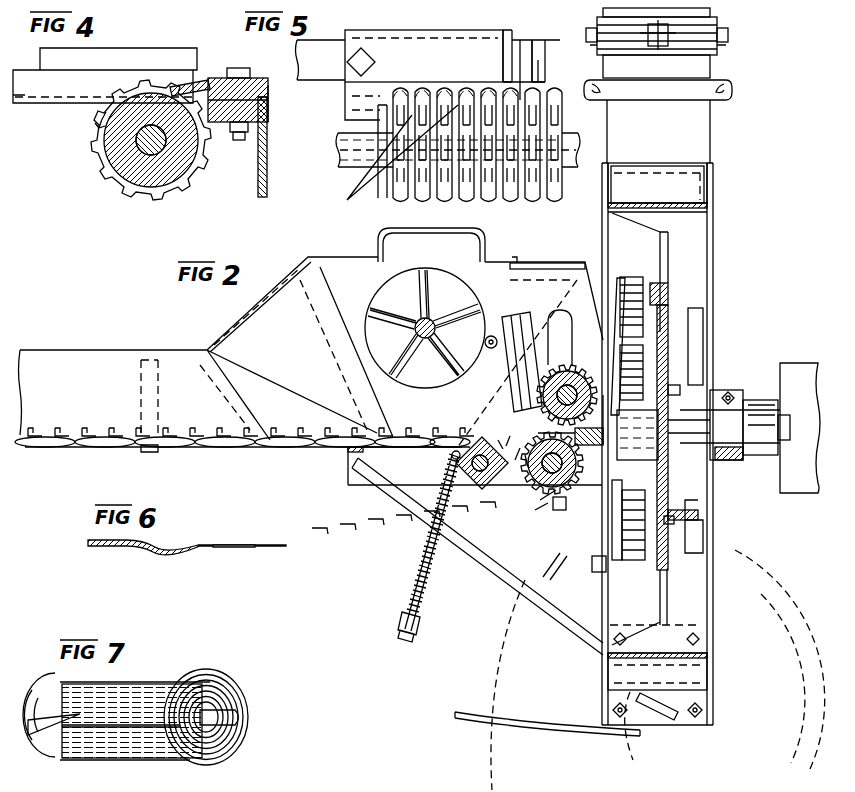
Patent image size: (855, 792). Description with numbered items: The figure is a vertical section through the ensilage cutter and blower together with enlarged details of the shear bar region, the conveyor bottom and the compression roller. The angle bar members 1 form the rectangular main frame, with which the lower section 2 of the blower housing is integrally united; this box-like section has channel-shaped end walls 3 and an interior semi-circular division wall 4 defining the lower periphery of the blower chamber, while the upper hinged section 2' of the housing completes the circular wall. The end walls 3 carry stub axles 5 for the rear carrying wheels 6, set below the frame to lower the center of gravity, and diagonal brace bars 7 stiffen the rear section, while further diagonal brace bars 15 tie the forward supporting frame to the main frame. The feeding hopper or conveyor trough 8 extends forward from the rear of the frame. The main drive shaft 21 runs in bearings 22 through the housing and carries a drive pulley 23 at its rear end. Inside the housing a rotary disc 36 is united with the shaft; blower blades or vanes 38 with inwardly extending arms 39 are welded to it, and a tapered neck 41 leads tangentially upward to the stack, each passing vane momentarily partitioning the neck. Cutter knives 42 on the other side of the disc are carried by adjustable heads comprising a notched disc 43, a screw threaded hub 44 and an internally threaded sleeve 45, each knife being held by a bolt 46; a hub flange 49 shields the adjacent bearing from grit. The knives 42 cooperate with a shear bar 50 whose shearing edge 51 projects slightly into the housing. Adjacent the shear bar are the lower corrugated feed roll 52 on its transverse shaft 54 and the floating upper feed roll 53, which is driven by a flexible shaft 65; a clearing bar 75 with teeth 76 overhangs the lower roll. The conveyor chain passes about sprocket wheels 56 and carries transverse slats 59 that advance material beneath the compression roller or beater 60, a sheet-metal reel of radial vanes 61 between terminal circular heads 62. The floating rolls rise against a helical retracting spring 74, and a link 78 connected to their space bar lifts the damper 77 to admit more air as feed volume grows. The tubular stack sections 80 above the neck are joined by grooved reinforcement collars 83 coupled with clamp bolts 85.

In FIG. 2, the angle bar members of the main frame 1 is at (348, 460).
In FIG. 4, the lower section of the blower housing 2 is at (273, 147).
In FIG. 5, the lower section of the blower housing 2 is at (536, 46).
In FIG. 2, the lower section of the blower housing 2 is at (706, 531).
In FIG. 2, the upper hinged section of the blower housing 2' is at (676, 444).
In FIG. 2, the end walls 3 is at (657, 716).
In FIG. 2, the semi-circular division wall 4 is at (680, 672).
In FIG. 2, the stub axles 5 is at (633, 737).
In FIG. 2, the rear carrying wheels 6 is at (496, 306).
In FIG. 2, the diagonal brace bars 7 is at (495, 574).
In FIG. 4, the feeding hopper or conveyor trough 8 is at (105, 75).
In FIG. 2, the feeding hopper or conveyor trough 8 is at (309, 340).
In FIG. 6, the feeding hopper or conveyor trough 8 is at (192, 545).
In FIG. 2, the diagonal brace bars 15 is at (541, 726).
In FIG. 2, the main drive shaft 21 is at (766, 456).
In FIG. 2, the bearings 22 is at (724, 425).
In FIG. 2, the drive pulley 23 is at (789, 485).
In FIG. 2, the rotary disc 36 is at (656, 340).
In FIG. 2, the blower blades or vanes 38 is at (650, 217).
In FIG. 2, the inwardly extending arms 39 is at (705, 346).
In FIG. 2, the tapered neck 41 is at (700, 140).
In FIG. 2, the cutter knives 42 is at (615, 292).
In FIG. 2, the revoluble notched disc 43 is at (664, 262).
In FIG. 2, the screw threaded hub 44 is at (632, 292).
In FIG. 2, the internally screw threaded sleeve 45 is at (656, 340).
In FIG. 2, the bolt 46 is at (567, 263).
In FIG. 2, the hub flange 49 is at (630, 440).
In FIG. 4, the shear bar 50 is at (241, 78).
In FIG. 5, the shear bar 50 is at (408, 75).
In FIG. 2, the shear bar 50 is at (570, 430).
In FIG. 4, the shearing edge 51 is at (268, 88).
In FIG. 5, the shearing edge 51 is at (485, 33).
In FIG. 2, the shearing edge 51 is at (700, 452).
In FIG. 4, the feed roll 52 is at (167, 180).
In FIG. 5, the feed roll 52 is at (455, 190).
In FIG. 2, the feed roll 52 is at (540, 485).
In FIG. 2, the feed roll 53 is at (540, 390).
In FIG. 4, the transverse shaft 54 is at (150, 148).
In FIG. 5, the transverse shaft 54 is at (343, 163).
In FIG. 2, the transverse shaft 54 is at (525, 490).
In FIG. 2, the sprocket wheels 56 is at (456, 465).
In FIG. 2, the transverse slats 59 is at (218, 430).
In FIG. 2, the compression roller or beater 60 is at (416, 317).
In FIG. 7, the compression roller or beater 60 is at (166, 748).
In FIG. 2, the radial vanes 61 is at (388, 298).
In FIG. 7, the radial vanes 61 is at (150, 705).
In FIG. 2, the terminal circular heads 62 is at (448, 285).
In FIG. 7, the terminal circular heads 62 is at (32, 712).
In FIG. 2, the flexible shaft 65 is at (567, 367).
In FIG. 2, the helical retracting spring 74 is at (420, 588).
In FIG. 4, the clearing bar 75 is at (266, 112).
In FIG. 5, the clearing bar 75 is at (520, 62).
In FIG. 2, the clearing bar 75 is at (562, 510).
In FIG. 4, the teeth 76 is at (192, 82).
In FIG. 5, the teeth 76 is at (396, 167).
In FIG. 2, the teeth 76 is at (549, 505).
In FIG. 2, the damper 77 is at (595, 565).
In FIG. 2, the link 78 is at (572, 522).
In FIG. 2, the stack section 80 is at (708, 12).
In FIG. 2, the grooved reinforcement collars 83 is at (722, 56).
In FIG. 2, the clamp bolts 85 is at (728, 32).